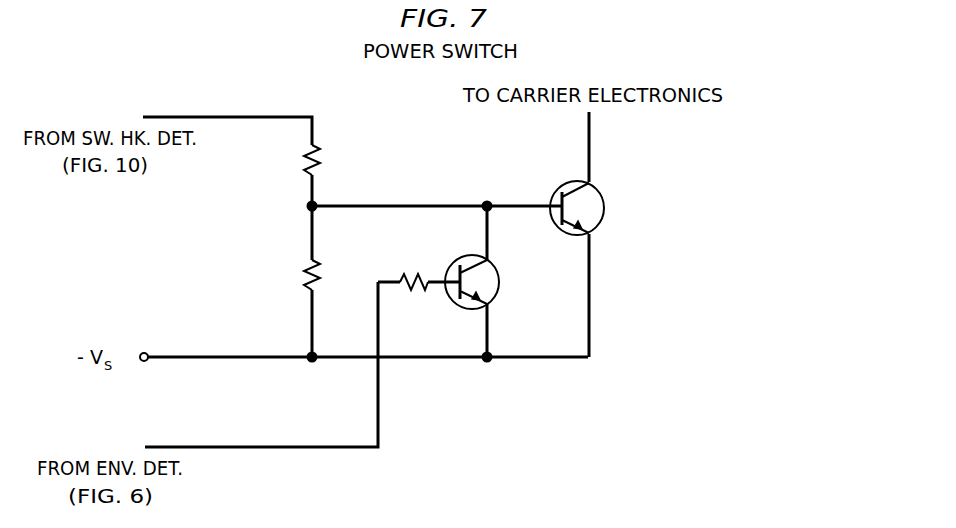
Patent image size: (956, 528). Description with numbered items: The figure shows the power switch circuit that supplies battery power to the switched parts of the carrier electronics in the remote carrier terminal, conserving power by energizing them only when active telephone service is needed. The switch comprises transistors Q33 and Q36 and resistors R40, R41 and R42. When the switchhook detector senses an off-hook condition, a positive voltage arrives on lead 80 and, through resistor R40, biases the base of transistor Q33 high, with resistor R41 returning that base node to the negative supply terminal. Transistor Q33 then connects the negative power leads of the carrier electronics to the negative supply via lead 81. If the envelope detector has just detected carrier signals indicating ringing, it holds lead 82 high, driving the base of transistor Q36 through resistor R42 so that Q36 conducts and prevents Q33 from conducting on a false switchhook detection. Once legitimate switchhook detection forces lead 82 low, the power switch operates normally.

The lead 80 is at (272, 117).
The lead 81 is at (589, 148).
The lead 82 is at (378, 410).
The resistor R40 is at (334, 175).
The resistor R41 is at (291, 281).
The resistor R42 is at (419, 299).
The transistor Q33 is at (604, 214).
The transistor Q36 is at (500, 287).